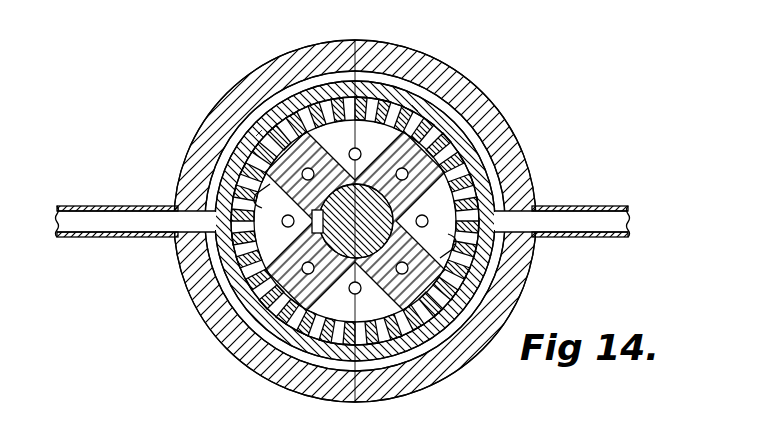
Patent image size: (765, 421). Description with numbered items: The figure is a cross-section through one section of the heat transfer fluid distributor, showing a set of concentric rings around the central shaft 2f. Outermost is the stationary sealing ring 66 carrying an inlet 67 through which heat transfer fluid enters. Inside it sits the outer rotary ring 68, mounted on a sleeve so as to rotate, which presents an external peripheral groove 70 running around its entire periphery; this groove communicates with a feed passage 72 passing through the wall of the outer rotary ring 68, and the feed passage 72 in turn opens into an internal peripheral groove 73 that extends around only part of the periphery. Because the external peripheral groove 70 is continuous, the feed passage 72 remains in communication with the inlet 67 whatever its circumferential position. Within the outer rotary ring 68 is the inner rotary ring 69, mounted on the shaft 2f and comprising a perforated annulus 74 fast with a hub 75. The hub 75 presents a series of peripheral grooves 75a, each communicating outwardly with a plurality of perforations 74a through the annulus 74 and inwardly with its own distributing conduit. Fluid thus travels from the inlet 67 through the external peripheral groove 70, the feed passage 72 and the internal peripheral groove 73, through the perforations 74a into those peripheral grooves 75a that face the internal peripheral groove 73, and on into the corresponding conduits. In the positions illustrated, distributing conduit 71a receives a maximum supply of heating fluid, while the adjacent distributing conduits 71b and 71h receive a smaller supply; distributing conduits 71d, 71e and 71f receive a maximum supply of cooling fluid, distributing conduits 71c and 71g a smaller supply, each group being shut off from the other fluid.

The stationary sealing ring 66 is at (232, 92).
The outer rotary ring 68 is at (262, 353).
The inner rotary ring 69 is at (250, 303).
The distributing conduit 71g is at (310, 345).
The internal peripheral groove 73 is at (262, 130).
The shaft 2f is at (412, 105).
The inlet 67 is at (95, 205).
The feed passage 72 is at (200, 222).
The external peripheral groove 70 is at (215, 250).
The hub 75 is at (275, 177).
The peripheral grooves 75a is at (300, 203).
The perforated annulus 74 is at (378, 333).
The perforations 74a is at (400, 338).
The distributing conduit 71a is at (283, 217).
The distributing conduit 71b is at (306, 167).
The distributing conduit 71c is at (403, 168).
The distributing conduit 71d is at (457, 173).
The distributing conduit 71e is at (470, 180).
The distributing conduit 71f is at (500, 242).
The distributing conduit 71h is at (258, 272).